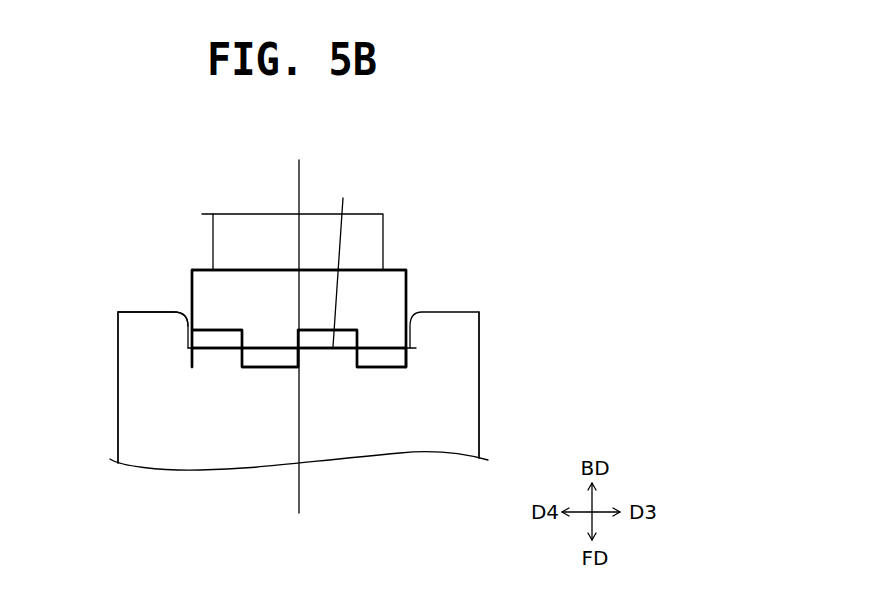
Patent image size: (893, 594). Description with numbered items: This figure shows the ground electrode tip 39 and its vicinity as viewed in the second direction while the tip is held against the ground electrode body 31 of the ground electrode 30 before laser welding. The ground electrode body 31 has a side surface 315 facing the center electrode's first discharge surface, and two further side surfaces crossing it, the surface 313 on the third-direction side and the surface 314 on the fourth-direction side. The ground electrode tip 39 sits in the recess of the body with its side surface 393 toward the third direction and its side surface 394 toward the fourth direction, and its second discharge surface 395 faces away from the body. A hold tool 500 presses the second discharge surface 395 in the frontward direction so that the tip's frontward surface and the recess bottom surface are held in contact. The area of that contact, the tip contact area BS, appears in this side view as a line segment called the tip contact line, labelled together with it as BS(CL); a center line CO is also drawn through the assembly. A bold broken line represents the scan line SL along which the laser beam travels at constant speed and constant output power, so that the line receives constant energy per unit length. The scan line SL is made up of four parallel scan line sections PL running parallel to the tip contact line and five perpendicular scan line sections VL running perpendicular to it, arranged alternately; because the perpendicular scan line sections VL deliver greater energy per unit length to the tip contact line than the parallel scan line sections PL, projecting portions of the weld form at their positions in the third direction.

The ground electrode 30 is at (293, 322).
The ground electrode body 31 is at (140, 335).
The surface 313 is at (480, 413).
The surface 314 is at (118, 433).
The surface 315 is at (132, 311).
The ground electrode tip 39 is at (338, 311).
The side surface 393 is at (409, 285).
The side surface 394 is at (189, 288).
The second discharge surface 395 is at (202, 266).
The hold tool 500 is at (243, 225).
The center line CO is at (298, 324).
The tip contact area BS is at (340, 260).
The scan line SL is at (408, 362).
The perpendicular scan line sections VL is at (240, 355).
The parallel scan line sections PL is at (277, 368).